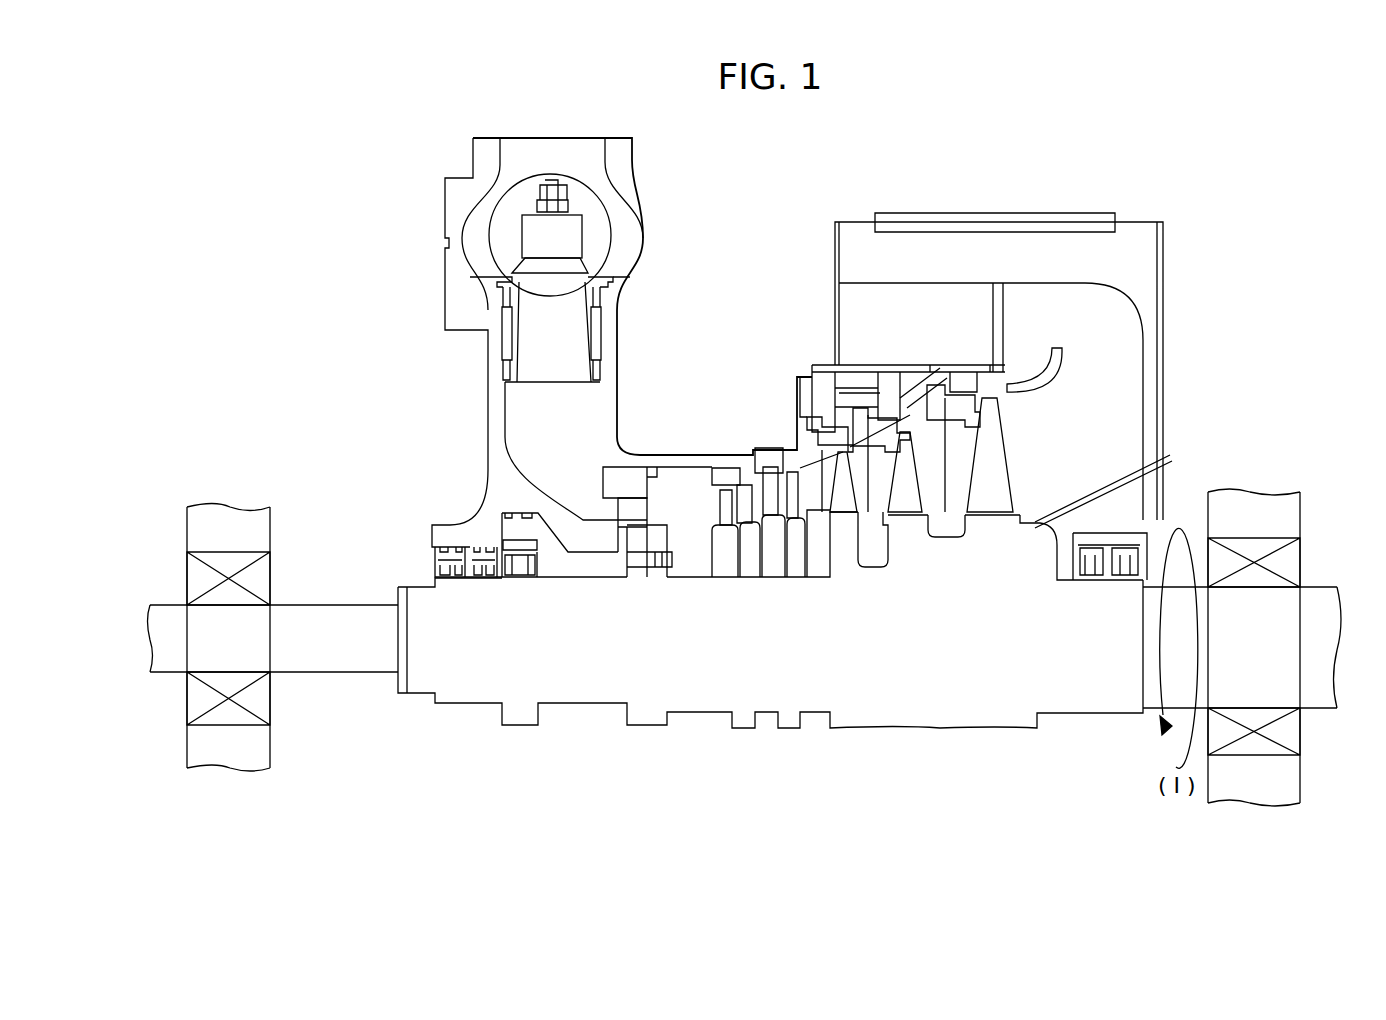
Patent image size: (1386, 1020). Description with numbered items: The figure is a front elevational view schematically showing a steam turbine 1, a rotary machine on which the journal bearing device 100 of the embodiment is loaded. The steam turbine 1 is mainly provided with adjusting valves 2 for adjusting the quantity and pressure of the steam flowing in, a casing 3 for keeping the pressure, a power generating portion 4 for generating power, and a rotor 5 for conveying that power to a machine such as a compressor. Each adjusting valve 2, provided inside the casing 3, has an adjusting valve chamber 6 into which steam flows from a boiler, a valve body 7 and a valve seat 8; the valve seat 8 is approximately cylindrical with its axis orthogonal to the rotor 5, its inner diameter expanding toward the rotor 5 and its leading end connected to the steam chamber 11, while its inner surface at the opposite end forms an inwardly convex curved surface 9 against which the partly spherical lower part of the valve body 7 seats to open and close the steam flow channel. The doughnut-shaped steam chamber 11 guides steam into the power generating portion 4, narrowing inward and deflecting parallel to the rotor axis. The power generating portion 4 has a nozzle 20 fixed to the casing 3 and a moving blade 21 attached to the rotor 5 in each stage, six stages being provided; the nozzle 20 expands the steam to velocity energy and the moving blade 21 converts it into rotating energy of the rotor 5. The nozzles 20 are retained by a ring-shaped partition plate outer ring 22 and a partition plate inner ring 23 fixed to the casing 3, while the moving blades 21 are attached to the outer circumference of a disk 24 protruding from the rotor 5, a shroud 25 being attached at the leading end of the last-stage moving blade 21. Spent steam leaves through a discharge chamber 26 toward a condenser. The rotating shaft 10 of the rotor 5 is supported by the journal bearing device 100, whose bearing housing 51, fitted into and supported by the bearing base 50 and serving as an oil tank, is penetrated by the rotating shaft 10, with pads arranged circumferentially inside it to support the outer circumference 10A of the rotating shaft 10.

The steam turbine 1 is at (812, 290).
The adjusting valve 2 is at (588, 242).
The casing 3 is at (748, 427).
The power generating portion 4 is at (689, 534).
The rotor 5 is at (850, 680).
The adjusting valve chamber 6 is at (580, 193).
The valve body 7 is at (570, 268).
The valve seat 8 is at (588, 330).
The curved surface 9 is at (513, 280).
The rotating shaft 10 is at (385, 612).
The outer circumference 10A is at (330, 605).
The steam chamber 11 is at (585, 398).
The nozzle 20 is at (798, 438).
The moving blade 21 is at (640, 508).
The partition plate outer ring 22 is at (610, 477).
The partition plate inner ring 23 is at (717, 545).
The disk 24 is at (735, 550).
The shroud 25 is at (1005, 413).
The discharge chamber 26 is at (1115, 410).
The bearing base 50 is at (213, 520).
The bearing housing 51 is at (200, 578).
The journal bearing device 100 is at (747, 580).